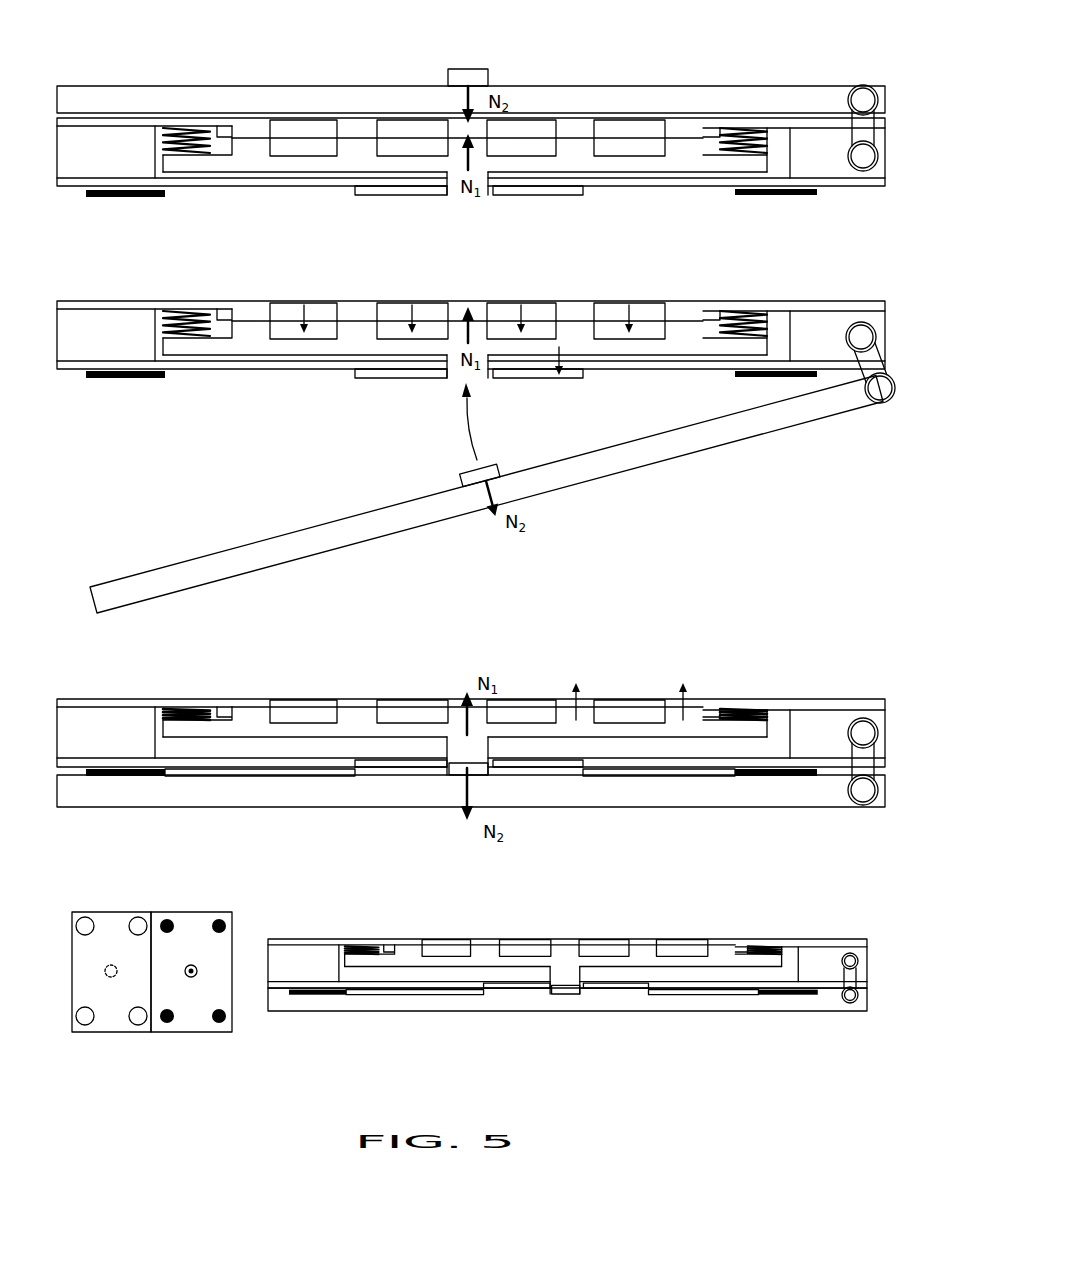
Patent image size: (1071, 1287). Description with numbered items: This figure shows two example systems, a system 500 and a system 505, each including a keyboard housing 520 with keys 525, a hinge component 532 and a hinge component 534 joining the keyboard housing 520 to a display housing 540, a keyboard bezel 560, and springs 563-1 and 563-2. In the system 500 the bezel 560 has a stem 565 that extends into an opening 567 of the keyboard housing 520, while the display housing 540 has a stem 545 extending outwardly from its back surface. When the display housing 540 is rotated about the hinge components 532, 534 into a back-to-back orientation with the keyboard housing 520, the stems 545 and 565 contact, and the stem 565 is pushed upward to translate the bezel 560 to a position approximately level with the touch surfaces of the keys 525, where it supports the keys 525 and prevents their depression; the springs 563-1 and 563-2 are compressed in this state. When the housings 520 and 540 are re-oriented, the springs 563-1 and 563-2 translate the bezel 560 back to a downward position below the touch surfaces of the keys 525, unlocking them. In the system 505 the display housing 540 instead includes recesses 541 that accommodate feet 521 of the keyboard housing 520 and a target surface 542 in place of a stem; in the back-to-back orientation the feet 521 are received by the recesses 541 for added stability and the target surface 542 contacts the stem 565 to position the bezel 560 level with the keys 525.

The system 500 is at (338, 42).
The system 505 is at (680, 899).
The keyboard housing 520 is at (120, 161).
The feet 521 is at (222, 920).
The keys 525 is at (290, 300).
The hinge component 532 is at (865, 92).
The hinge component 534 is at (865, 168).
The display housing 540 is at (120, 111).
The recesses 541 is at (141, 918).
The target surface 542 is at (110, 978).
The stem 545 is at (462, 470).
The keyboard bezel 560 is at (344, 316).
The spring 563-1 is at (188, 128).
The spring 563-2 is at (742, 130).
The stem 565 is at (447, 380).
The opening 567 is at (493, 380).